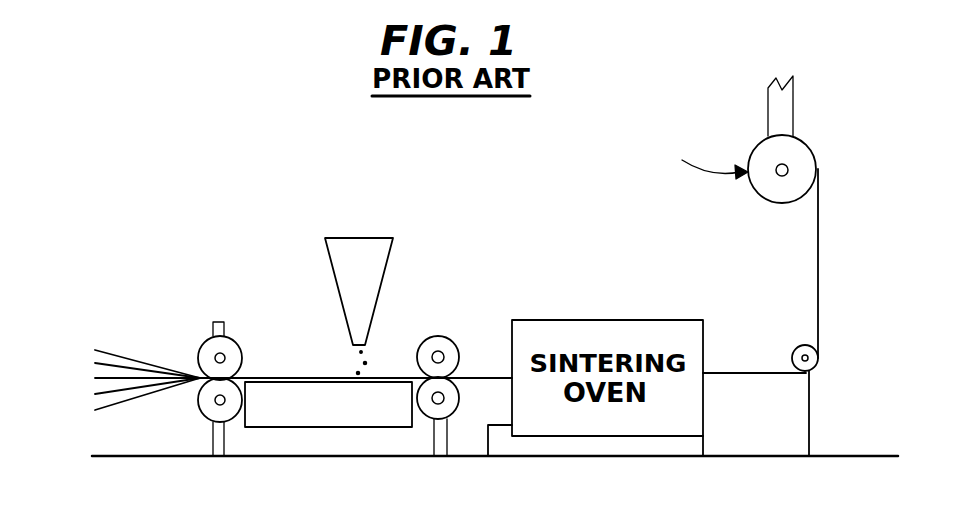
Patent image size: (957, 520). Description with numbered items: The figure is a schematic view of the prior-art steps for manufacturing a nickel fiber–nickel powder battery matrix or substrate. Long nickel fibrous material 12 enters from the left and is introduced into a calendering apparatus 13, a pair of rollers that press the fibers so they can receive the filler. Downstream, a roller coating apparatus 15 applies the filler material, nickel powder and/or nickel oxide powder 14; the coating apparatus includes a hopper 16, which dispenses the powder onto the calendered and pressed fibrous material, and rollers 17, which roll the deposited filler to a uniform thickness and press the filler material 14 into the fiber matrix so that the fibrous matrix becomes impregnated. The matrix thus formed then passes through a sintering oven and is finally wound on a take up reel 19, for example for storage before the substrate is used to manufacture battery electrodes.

The long nickel fibrous material 12 is at (164, 365).
The calendering apparatus 13 is at (246, 359).
The nickel powder and/or nickel oxide powder 14 is at (357, 363).
The roller coating apparatus 15 is at (458, 248).
The hopper 16 is at (330, 260).
The rollers 17 is at (453, 348).
The take up reel 19 is at (780, 203).